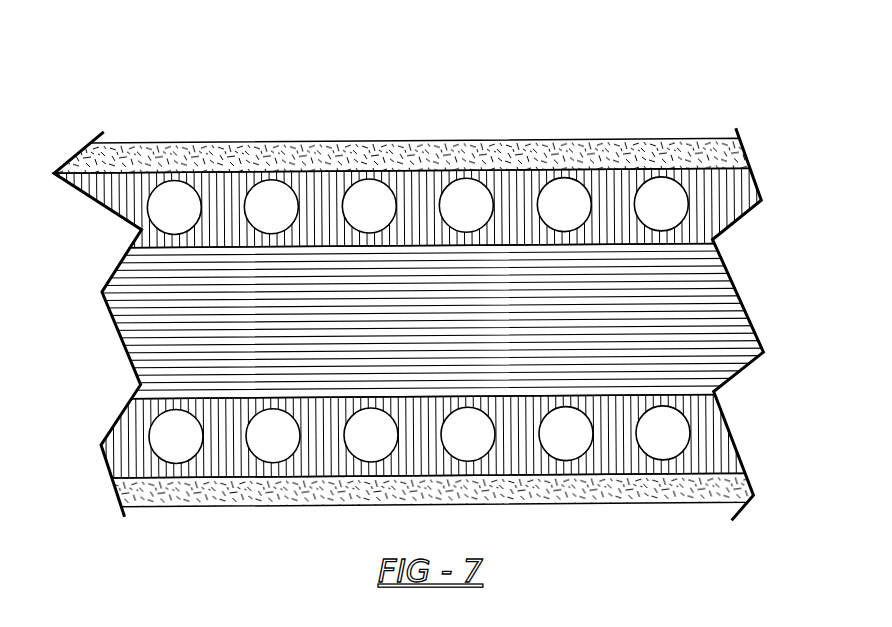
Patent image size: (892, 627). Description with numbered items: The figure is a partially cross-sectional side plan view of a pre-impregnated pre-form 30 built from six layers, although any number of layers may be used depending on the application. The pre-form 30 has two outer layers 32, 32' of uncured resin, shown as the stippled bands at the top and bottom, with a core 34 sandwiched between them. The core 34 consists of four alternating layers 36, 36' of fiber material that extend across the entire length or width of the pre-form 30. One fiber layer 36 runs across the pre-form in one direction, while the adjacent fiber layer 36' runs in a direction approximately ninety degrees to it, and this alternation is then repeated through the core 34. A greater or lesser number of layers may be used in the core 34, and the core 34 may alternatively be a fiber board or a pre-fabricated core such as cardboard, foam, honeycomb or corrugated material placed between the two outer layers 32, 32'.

The pre-impregnated pre-form 30 is at (690, 70).
The outer layer 32 is at (402, 104).
The outer layer 32' is at (433, 530).
The core 34 is at (439, 338).
The fiber layer 36 is at (395, 338).
The fiber layer 36' is at (399, 324).